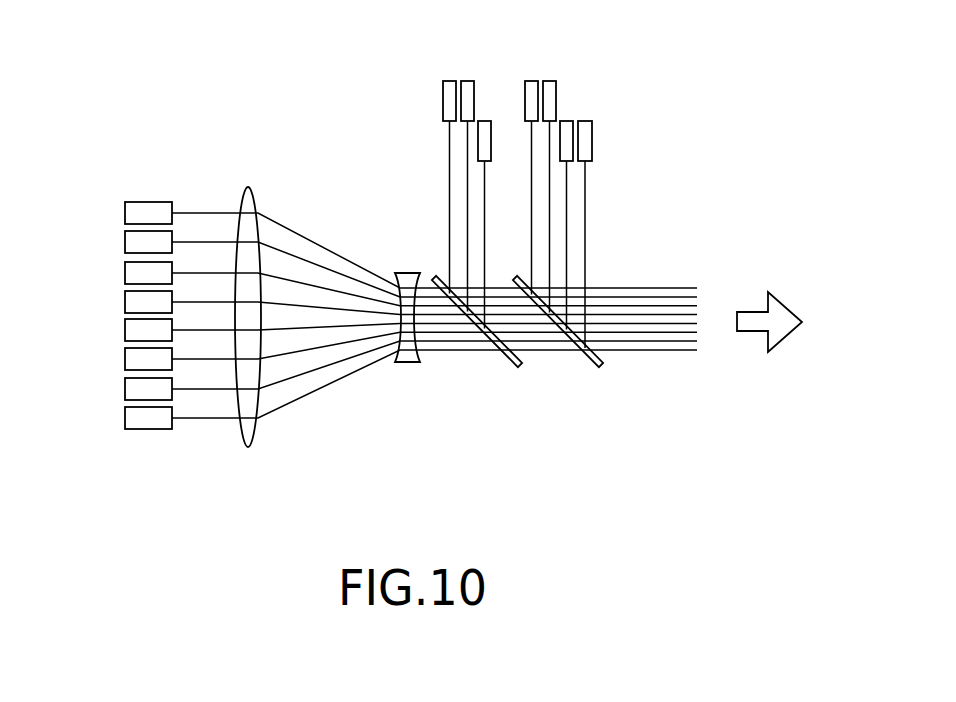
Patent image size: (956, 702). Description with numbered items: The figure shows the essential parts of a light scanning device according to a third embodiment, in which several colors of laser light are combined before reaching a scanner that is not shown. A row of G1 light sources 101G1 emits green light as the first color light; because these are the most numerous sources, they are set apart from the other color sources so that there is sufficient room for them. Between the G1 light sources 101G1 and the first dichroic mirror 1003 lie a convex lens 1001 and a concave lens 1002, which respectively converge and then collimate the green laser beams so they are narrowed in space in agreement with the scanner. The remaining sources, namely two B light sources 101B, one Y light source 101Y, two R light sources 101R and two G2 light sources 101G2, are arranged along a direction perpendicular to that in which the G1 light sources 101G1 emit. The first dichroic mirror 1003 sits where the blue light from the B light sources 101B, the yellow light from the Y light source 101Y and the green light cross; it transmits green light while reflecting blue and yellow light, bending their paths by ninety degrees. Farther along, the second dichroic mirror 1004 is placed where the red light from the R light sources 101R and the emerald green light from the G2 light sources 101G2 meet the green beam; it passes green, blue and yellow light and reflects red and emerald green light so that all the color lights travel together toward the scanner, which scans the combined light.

The G1 light sources 101G1 is at (150, 200).
The convex lens 1001 is at (249, 186).
The concave lens 1002 is at (407, 362).
The first dichroic mirror 1003 is at (522, 367).
The second dichroic mirror 1004 is at (603, 367).
The B light sources 101B is at (452, 81).
The Y light source 101Y is at (483, 121).
The R light sources 101R is at (552, 81).
The G2 light sources 101G2 is at (583, 121).